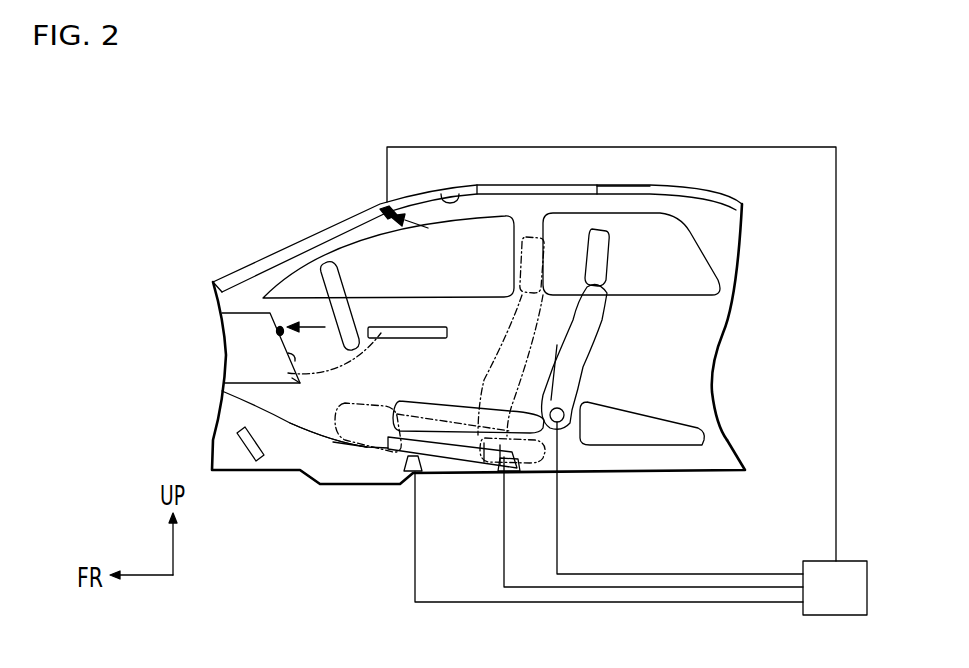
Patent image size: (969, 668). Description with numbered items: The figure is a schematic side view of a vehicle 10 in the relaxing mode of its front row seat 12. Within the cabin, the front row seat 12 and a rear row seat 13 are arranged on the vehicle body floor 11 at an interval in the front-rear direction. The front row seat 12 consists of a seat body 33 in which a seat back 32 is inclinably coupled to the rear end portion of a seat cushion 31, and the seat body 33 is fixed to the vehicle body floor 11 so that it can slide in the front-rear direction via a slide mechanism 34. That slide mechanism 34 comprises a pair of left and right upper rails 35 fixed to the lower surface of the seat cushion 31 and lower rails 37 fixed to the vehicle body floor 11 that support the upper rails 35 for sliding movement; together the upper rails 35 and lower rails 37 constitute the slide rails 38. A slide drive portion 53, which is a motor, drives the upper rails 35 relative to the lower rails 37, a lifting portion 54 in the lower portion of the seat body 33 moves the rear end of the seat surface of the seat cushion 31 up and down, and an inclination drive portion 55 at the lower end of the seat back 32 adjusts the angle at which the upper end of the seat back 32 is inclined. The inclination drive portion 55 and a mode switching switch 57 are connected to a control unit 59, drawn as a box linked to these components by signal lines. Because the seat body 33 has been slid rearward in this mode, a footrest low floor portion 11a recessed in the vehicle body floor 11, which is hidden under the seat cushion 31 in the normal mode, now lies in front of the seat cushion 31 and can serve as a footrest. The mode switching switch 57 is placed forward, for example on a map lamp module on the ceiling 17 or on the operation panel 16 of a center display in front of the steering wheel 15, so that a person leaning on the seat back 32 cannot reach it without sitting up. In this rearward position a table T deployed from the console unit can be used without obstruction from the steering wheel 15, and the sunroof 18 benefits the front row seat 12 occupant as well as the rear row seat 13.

The vehicle 10 is at (196, 126).
The vehicle body floor 11 is at (715, 468).
The footrest low floor portion 11a is at (353, 478).
The front row seat 12 is at (512, 240).
The rear row seat 13 is at (673, 418).
The steering wheel 15 is at (323, 262).
The operation panel 16 is at (287, 358).
The ceiling 17 is at (458, 192).
The sunroof 18 is at (588, 185).
The seat cushion 31 is at (520, 398).
The seat back 32 is at (607, 328).
The seat body 33 is at (887, 240).
The slide mechanism 34 is at (335, 468).
The upper rails 35 is at (222, 391).
The lower rails 37 is at (328, 435).
The slide rails 38 is at (350, 444).
The slide drive portion 53 is at (413, 457).
The lifting portion 54 is at (522, 443).
The inclination drive portion 55 is at (563, 423).
The mode switching switch 57 is at (402, 213).
The control unit 59 is at (870, 585).
The table T is at (300, 372).